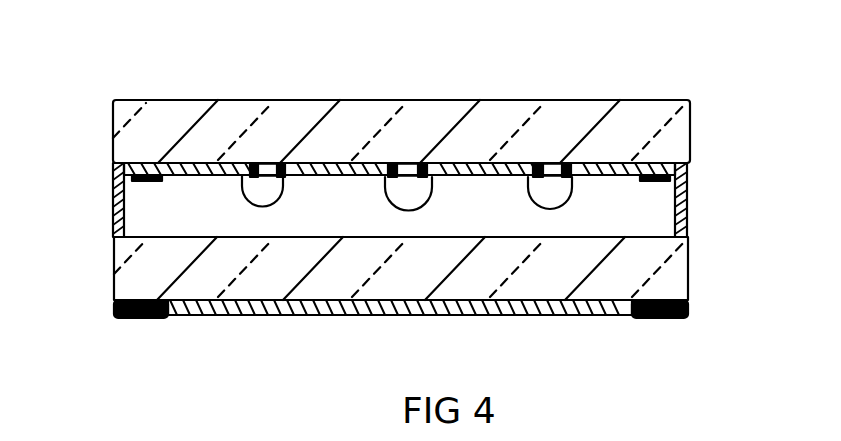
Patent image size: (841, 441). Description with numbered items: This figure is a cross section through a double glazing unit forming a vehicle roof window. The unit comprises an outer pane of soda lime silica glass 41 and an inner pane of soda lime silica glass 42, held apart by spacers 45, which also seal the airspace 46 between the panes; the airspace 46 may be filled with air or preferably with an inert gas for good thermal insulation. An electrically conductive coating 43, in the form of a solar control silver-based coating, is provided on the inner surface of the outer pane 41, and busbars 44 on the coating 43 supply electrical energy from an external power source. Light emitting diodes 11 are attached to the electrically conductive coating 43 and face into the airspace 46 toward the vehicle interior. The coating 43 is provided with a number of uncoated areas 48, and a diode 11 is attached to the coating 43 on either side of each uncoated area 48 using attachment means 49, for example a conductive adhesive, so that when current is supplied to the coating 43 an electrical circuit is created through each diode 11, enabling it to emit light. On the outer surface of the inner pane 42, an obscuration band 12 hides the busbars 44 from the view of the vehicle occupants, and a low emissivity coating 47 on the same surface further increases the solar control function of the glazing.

The light emitting diodes 11 is at (563, 180).
The obscuration band 12 is at (120, 318).
The outer pane of glazing material 41 is at (653, 115).
The inner pane of glazing material 42 is at (670, 283).
The electrically conductive coating 43 is at (447, 173).
The busbars 44 is at (112, 189).
The spacers 45 is at (113, 218).
The airspace 46 is at (213, 208).
The low emissivity coating 47 is at (221, 318).
The uncoated areas 48 is at (268, 163).
The attachment means 49 is at (283, 168).